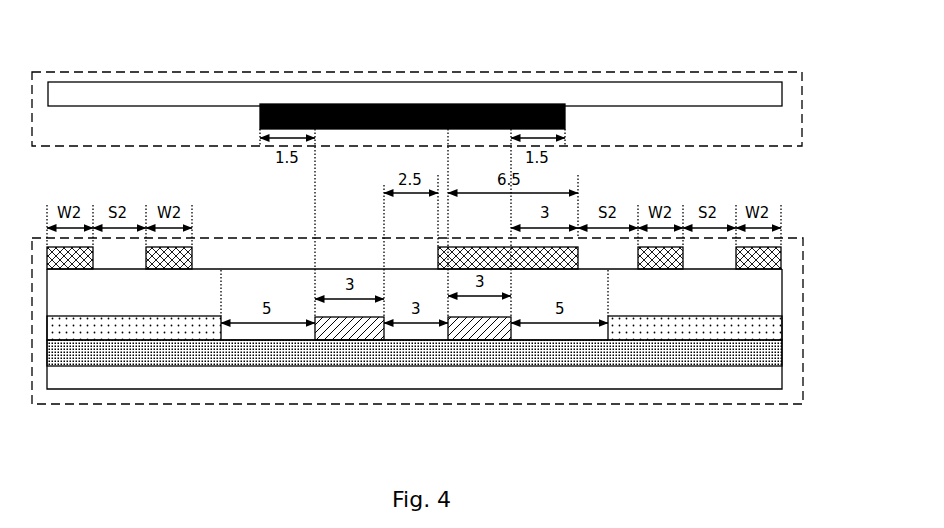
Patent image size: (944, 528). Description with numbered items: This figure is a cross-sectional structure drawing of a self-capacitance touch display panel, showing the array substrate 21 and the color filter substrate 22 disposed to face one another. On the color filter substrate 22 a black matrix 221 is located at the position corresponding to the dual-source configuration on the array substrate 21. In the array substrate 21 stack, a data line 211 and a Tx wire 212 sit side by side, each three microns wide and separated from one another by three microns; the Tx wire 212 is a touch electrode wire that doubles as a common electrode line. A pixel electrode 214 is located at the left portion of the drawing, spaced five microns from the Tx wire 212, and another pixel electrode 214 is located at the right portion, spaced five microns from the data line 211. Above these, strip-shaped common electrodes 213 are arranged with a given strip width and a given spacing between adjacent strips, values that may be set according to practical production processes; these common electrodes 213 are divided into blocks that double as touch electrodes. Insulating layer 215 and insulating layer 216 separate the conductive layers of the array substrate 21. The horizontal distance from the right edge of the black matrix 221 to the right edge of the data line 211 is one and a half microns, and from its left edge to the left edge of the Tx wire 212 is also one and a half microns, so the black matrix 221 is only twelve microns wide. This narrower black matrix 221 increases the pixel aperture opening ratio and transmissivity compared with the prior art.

The array substrate 21 is at (738, 404).
The data line 211 is at (466, 337).
The Tx wire 212 is at (343, 327).
The common electrode 213 is at (165, 269).
The pixel electrode 214 is at (70, 336).
The insulating layer 215 is at (275, 360).
The insulating layer 216 is at (552, 330).
The color filter substrate 22 is at (226, 72).
The black matrix 221 is at (487, 104).